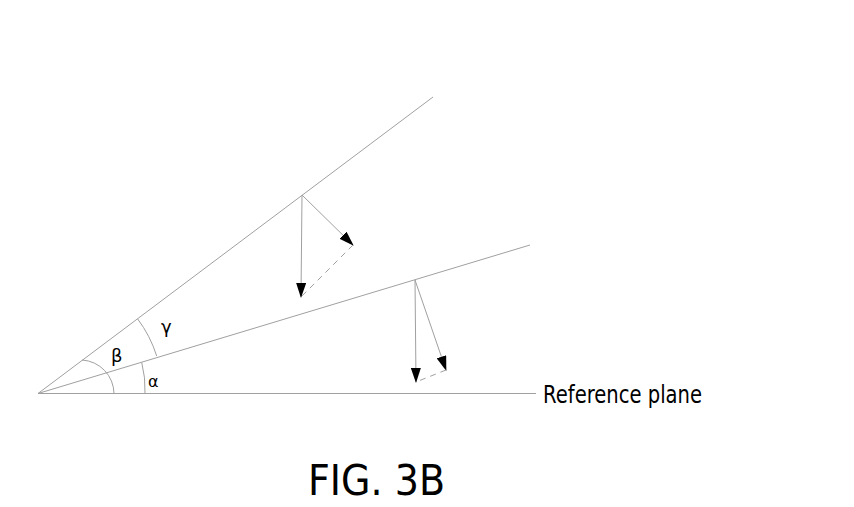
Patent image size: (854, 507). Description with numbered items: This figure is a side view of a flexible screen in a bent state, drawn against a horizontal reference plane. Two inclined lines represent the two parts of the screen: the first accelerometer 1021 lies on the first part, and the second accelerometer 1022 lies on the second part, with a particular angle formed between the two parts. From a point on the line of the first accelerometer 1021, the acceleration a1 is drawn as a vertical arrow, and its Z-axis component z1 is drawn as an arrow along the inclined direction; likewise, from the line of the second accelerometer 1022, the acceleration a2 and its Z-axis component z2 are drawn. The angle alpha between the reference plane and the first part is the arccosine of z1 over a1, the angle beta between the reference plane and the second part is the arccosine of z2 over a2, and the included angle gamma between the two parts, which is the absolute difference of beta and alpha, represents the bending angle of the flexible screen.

The first accelerometer 1021 is at (502, 252).
The second accelerometer 1022 is at (415, 106).
The acceleration of the first accelerometer a1 is at (394, 331).
The acceleration of the second accelerometer a2 is at (279, 246).
The acceleration component of the first accelerometer in the Z-axis direction z1 is at (432, 325).
The acceleration component of the second accelerometer in the Z-axis direction z2 is at (327, 215).